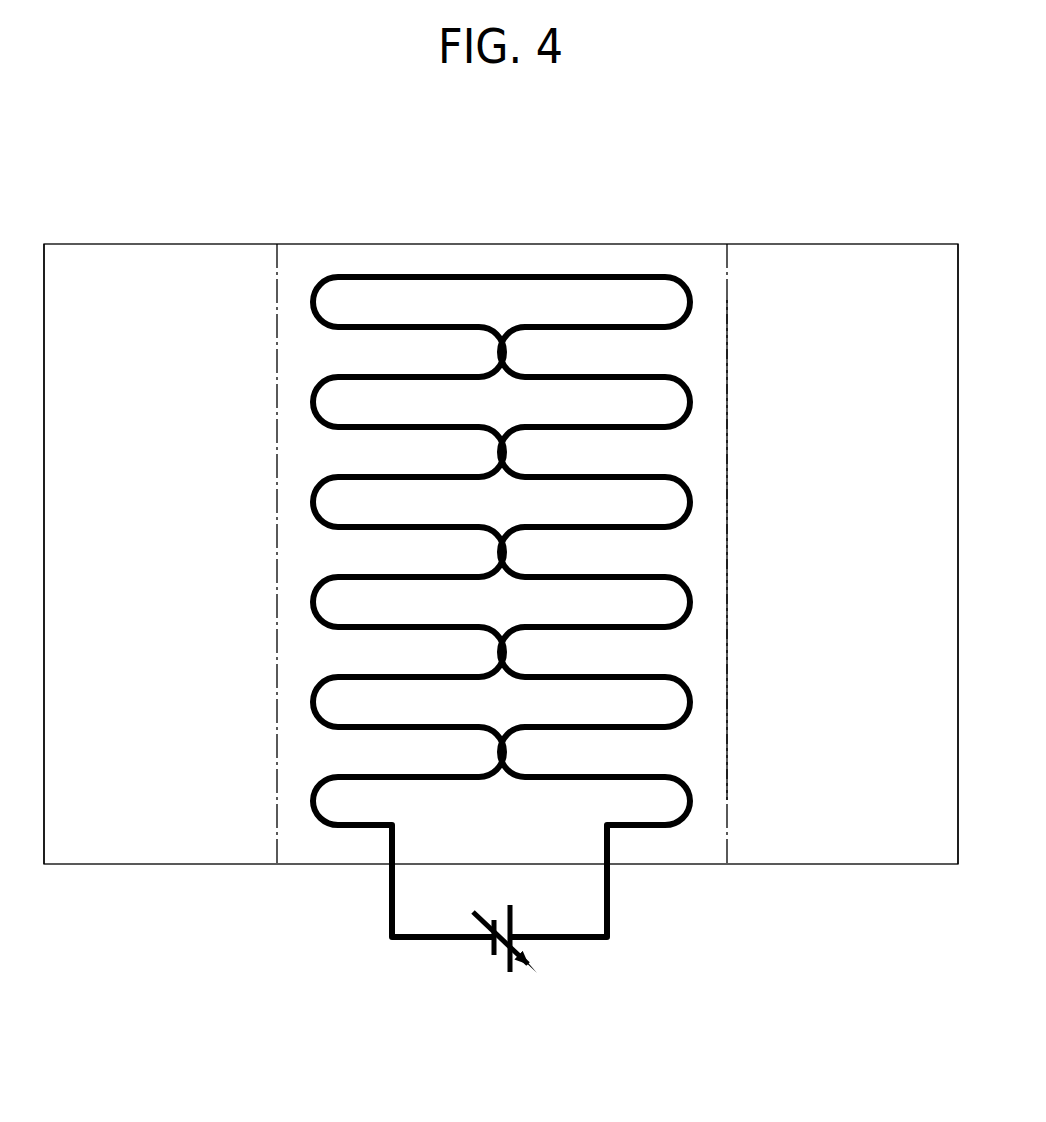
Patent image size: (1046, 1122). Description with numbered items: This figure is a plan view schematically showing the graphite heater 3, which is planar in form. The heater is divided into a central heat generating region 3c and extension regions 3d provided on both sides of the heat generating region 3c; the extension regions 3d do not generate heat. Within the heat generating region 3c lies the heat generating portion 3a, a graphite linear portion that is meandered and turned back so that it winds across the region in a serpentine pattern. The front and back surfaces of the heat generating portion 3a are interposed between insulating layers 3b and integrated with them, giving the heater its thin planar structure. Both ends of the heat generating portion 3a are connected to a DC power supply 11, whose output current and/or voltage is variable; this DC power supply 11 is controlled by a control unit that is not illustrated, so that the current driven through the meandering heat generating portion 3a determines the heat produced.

The graphite heater 3 is at (355, 228).
The heat generating portion 3a is at (693, 700).
The insulating layer 3b is at (540, 246).
The heat generating region 3c is at (688, 252).
The extension region 3d is at (116, 253).
The DC power supply 11 is at (478, 966).